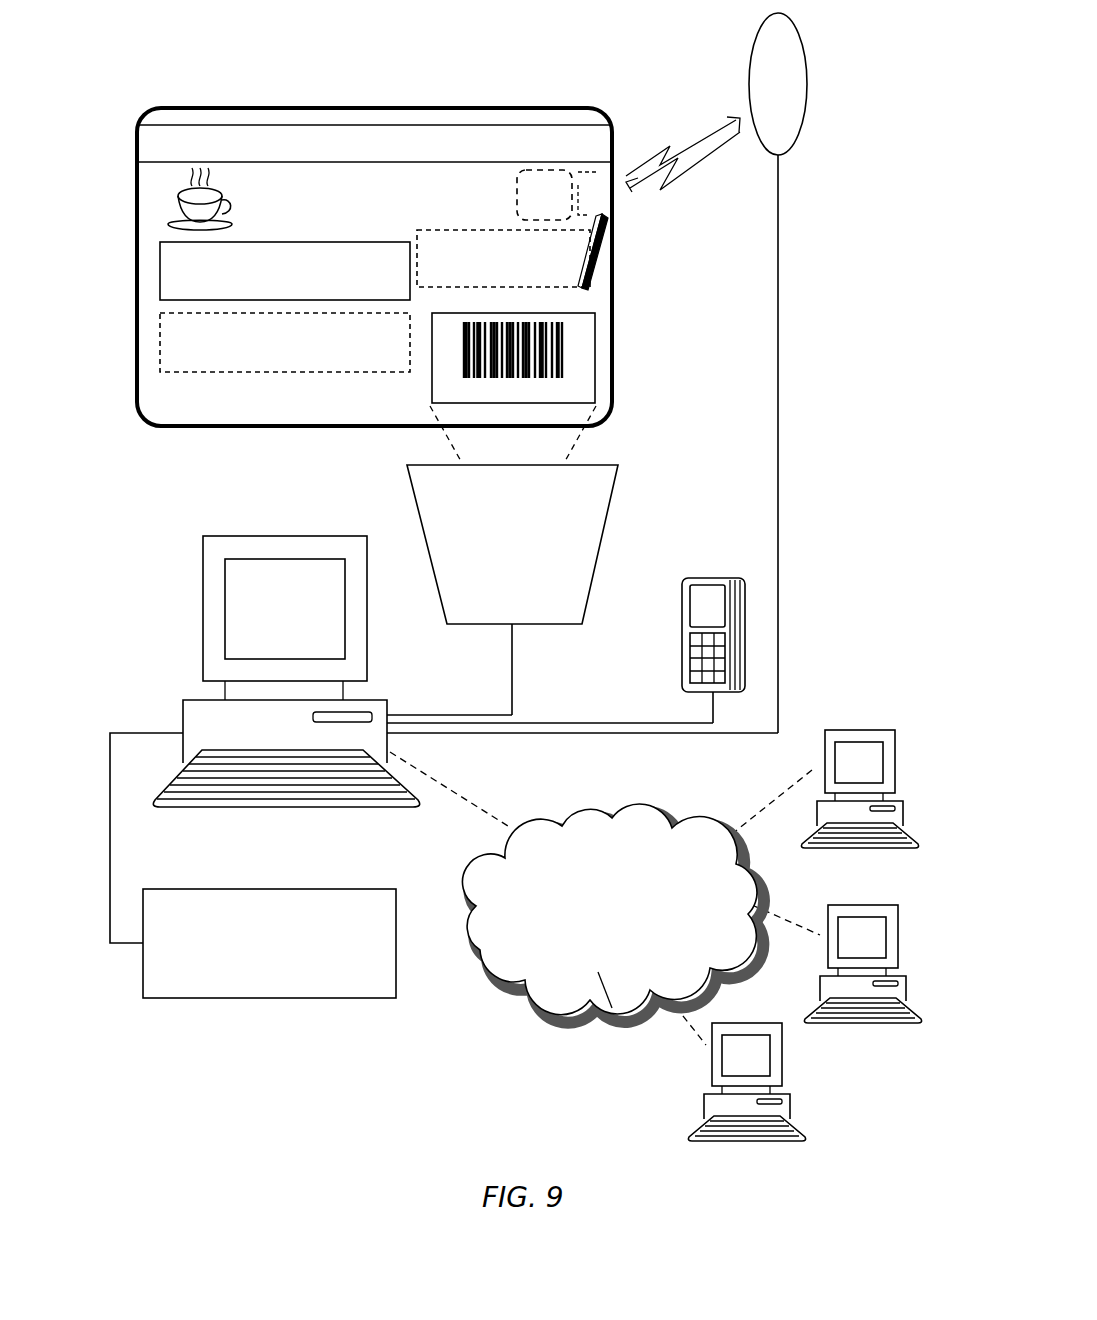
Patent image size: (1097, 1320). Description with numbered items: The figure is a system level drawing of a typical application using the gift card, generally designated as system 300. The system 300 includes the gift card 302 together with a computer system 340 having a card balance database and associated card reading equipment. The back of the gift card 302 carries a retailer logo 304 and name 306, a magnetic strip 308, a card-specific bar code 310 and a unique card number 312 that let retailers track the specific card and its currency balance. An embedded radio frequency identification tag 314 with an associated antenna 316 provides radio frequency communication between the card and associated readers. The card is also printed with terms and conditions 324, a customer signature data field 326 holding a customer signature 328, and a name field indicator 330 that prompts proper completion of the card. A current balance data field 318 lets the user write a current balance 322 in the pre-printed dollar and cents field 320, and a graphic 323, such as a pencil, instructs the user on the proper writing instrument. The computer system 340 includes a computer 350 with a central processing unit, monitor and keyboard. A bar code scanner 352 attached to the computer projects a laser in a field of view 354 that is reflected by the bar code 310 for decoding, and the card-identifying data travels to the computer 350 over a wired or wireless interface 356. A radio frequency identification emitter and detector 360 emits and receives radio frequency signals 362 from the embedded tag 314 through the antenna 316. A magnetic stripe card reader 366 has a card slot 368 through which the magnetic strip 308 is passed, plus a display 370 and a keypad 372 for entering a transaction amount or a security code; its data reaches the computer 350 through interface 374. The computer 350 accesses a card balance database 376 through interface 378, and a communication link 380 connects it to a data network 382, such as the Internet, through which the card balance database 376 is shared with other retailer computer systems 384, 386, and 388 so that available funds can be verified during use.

The system 300 is at (166, 85).
The gift card 302 is at (132, 190).
The retailer logo 304 is at (205, 172).
The name 306 is at (330, 182).
The magnetic strip 308 is at (412, 132).
The bar code 310 is at (564, 323).
The card number 312 is at (598, 395).
The radio frequency identification tag 314 is at (530, 170).
The antenna 316 is at (590, 170).
The current balance data field 318 is at (618, 212).
The dollar and cents field 320 is at (612, 278).
The current balance 322 is at (612, 245).
The graphic 323 is at (612, 258).
The terms and conditions region 324 is at (160, 262).
The customer signature data field 326 is at (160, 322).
The customer signature 328 is at (178, 338).
The name field indicator 330 is at (182, 398).
The computer system 340 is at (122, 526).
The computer 350 is at (200, 660).
The bar code scanner 352 is at (605, 544).
The field of view 354 is at (595, 452).
The interface 356 is at (514, 685).
The radio frequency identification emitter and detector 360 is at (800, 135).
The radio frequency signals 362 is at (664, 150).
The magnetic stripe card reader 366 is at (746, 582).
The card slot 368 is at (740, 640).
The display 370 is at (718, 622).
The keypad 372 is at (722, 676).
The interface 374 is at (714, 722).
The card balance database 376 is at (398, 968).
The interface 378 is at (110, 950).
The communication link 380 is at (472, 825).
The data network 382 is at (612, 1010).
The computer system 384 is at (872, 728).
The computer system 386 is at (899, 905).
The computer system 388 is at (784, 1068).